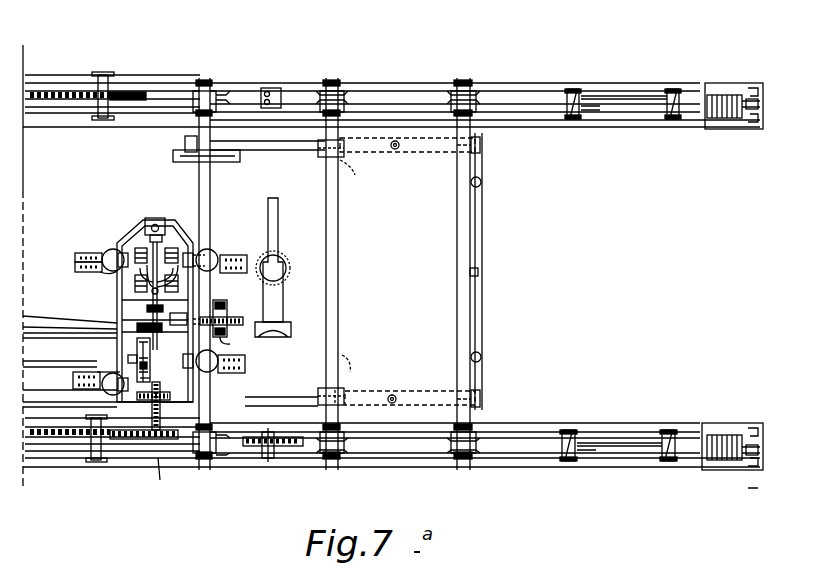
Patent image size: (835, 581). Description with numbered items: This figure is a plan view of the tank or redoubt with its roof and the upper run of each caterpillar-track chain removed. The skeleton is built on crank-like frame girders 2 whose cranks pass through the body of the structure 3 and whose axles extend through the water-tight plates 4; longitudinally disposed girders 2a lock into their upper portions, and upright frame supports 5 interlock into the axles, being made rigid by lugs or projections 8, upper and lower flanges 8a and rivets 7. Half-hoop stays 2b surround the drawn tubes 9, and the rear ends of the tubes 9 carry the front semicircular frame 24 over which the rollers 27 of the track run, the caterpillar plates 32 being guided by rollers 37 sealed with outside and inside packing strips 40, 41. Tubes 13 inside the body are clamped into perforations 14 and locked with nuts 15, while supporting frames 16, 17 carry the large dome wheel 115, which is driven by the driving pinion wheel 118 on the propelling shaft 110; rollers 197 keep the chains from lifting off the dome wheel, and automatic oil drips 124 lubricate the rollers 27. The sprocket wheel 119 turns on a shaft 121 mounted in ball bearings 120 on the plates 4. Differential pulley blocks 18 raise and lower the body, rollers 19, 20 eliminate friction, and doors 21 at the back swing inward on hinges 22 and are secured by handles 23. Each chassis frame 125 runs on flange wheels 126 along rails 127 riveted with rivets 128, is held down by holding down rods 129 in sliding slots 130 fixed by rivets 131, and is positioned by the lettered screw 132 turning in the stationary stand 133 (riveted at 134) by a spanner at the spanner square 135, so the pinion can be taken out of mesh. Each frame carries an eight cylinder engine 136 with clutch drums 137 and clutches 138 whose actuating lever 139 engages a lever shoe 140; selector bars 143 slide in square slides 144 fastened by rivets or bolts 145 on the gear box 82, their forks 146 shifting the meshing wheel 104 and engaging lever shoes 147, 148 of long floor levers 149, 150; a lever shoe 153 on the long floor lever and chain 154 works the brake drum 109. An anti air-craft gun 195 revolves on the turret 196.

The frame girders 2 is at (210, 191).
The longitudinally disposed girders 2a is at (440, 152).
The half-hoop upper and lower stays 2b is at (578, 95).
The body of the structure 3 is at (48, 267).
The water-tight plates 4 is at (494, 90).
The upright frame supports 5 is at (207, 80).
The rivets 7 is at (214, 90).
The lugs or projections 8 is at (214, 108).
The upper and lower flanges 8a is at (198, 84).
The drawn tubes 9 is at (396, 96).
The tubes 13 is at (262, 150).
The perforations or bores 14 is at (321, 152).
The nuts 15 is at (185, 143).
The supporting frame 16 is at (66, 84).
The supporting frame 17 is at (147, 92).
The differential pulley blocks 18 is at (178, 163).
The rollers 19 is at (484, 146).
The rollers 20 is at (344, 162).
The doors 21 is at (484, 236).
The hinges 22 is at (481, 182).
The handles 23 is at (478, 273).
The front semicircular frame 24 is at (704, 124).
The rollers 27 is at (760, 105).
The caterpillar plates 32 is at (760, 124).
The rollers 37 is at (758, 96).
The outside packing strip 40 is at (636, 77).
The inside packing strip 41 is at (594, 118).
The gear box 82 is at (210, 374).
The meshing wheel 104 is at (738, 84).
The brake drum 109 is at (160, 404).
The propelling shaft 110 is at (150, 440).
The large dome wheel 115 is at (40, 445).
The driving pinion wheel 118 is at (162, 478).
The sprocket wheel 119 is at (252, 448).
The ball bearings 120 is at (270, 458).
The shaft 121 is at (266, 460).
The automatic oil drips 124 is at (278, 79).
The chassis frame 125 is at (130, 238).
The flange wheels 126 is at (216, 258).
The rails 127 is at (114, 249).
The rivets 128 is at (203, 253).
The holding down rods 129 is at (110, 272).
The sliding slots 130 is at (75, 267).
The rivets 131 is at (75, 257).
The lettered screw 132 is at (248, 301).
The stationary stand 133 is at (227, 311).
The rivets 134 is at (243, 343).
The spanner square 135 is at (286, 330).
The eight cylinder internal combustion engines 136 is at (163, 252).
The clutch drums 137 is at (148, 306).
The clutches 138 is at (150, 312).
The actuating lever 139 is at (137, 326).
The lever shoe 140 is at (147, 309).
The selector bars 143 is at (150, 359).
The square slides 144 is at (149, 346).
The rivets or bolts 145 is at (150, 380).
The lever and gear moving fork 146 is at (148, 369).
The lever shoe 147 is at (128, 357).
The lever shoe 148 is at (118, 372).
The long floor lever 149 is at (70, 321).
The long floor lever 150 is at (64, 378).
The lever shoe 153 is at (97, 372).
The long floor lever and chain 154 is at (75, 399).
The anti air-craft gun 195 is at (288, 301).
The cylinder or turret 196 is at (281, 263).
The rollers 197 is at (106, 73).